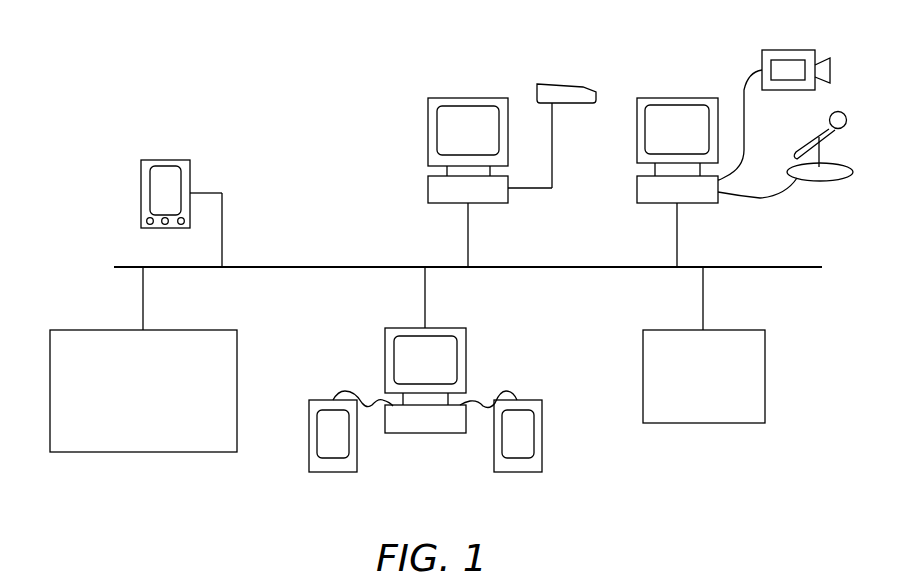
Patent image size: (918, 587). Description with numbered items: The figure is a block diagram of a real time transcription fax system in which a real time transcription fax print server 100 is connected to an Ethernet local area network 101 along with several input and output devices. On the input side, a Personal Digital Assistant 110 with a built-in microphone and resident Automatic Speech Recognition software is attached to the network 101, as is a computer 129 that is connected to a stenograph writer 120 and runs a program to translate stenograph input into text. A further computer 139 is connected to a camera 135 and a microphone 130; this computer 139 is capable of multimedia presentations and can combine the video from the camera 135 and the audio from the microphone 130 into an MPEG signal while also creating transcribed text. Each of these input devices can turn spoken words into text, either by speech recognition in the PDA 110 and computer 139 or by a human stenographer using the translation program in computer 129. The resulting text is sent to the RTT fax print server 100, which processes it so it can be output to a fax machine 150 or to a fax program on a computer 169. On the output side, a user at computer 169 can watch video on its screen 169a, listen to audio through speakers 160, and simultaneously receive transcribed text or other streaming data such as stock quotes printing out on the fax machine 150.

The real time transcription fax print server 100 is at (73, 330).
The Ethernet local area network 101 is at (566, 263).
The Personal Digital Assistant 110 is at (163, 160).
The stenograph writer 120 is at (543, 82).
The computer 129 is at (428, 190).
The microphone 130 is at (822, 182).
The camera 135 is at (787, 50).
The computer 139 is at (677, 98).
The fax machine 150 is at (766, 375).
The speakers 160 is at (332, 472).
The computer 169 is at (395, 355).
The screen 169a is at (410, 364).